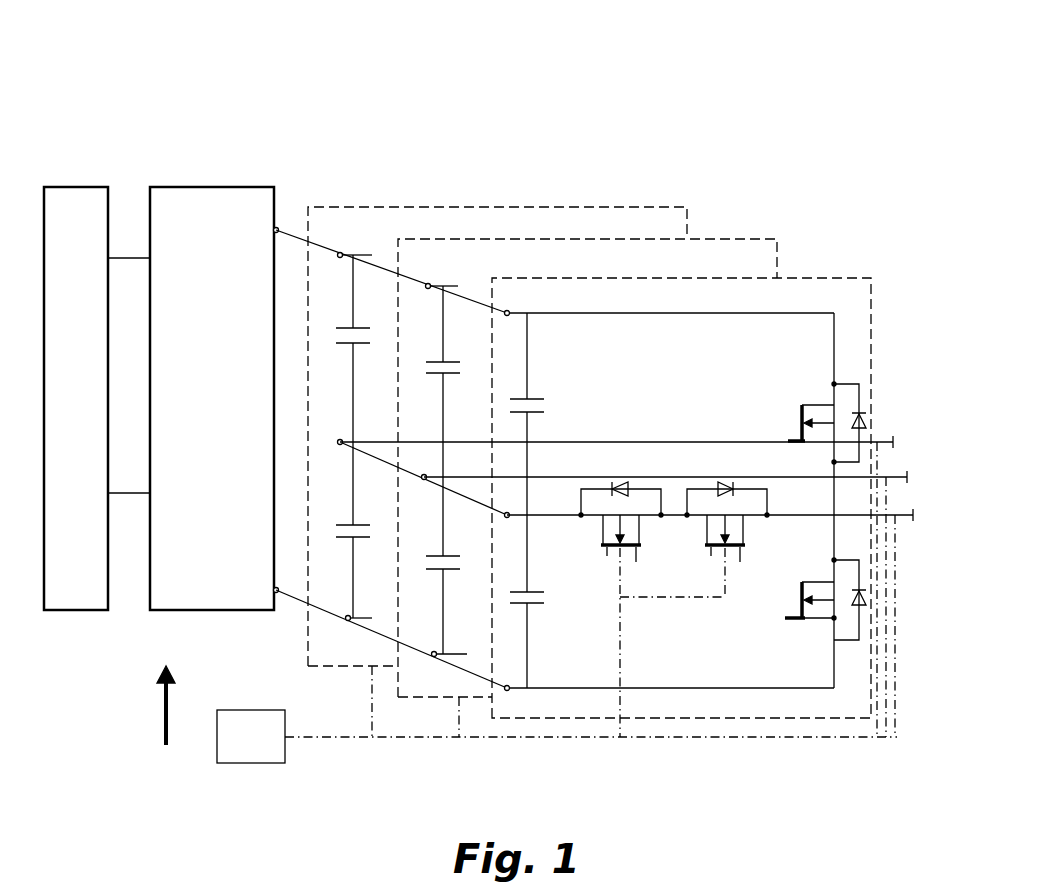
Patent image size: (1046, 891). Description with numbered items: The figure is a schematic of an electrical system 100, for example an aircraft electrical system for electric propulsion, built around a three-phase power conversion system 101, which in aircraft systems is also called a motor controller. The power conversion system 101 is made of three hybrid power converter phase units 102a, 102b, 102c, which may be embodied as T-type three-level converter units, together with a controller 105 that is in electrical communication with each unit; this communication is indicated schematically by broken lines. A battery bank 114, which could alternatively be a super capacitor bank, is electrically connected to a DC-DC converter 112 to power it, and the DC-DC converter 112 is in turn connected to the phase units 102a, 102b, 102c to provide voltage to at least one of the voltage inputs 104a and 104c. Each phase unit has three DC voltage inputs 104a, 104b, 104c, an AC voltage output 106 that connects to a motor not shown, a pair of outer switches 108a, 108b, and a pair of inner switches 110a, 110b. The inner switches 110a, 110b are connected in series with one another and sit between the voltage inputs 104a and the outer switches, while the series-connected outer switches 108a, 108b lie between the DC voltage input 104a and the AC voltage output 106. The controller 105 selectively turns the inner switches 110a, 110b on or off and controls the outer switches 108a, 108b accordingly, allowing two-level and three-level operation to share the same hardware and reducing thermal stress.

The electrical system 100 is at (157, 88).
The three-phase power conversion system 101 is at (277, 690).
The hybrid power converter phase unit 102a is at (815, 256).
The hybrid power converter phase unit 102b is at (713, 222).
The hybrid power converter phase unit 102c is at (541, 196).
The DC voltage input 104a is at (509, 310).
The DC voltage input 104b is at (509, 517).
The DC voltage input 104c is at (508, 693).
The controller 105 is at (557, 602).
The AC voltage output 106 is at (877, 440).
The outer switch 108a is at (839, 382).
The outer switch 108b is at (852, 643).
The inner switch 110a is at (618, 490).
The inner switch 110b is at (723, 490).
The DC-DC converter 112 is at (251, 185).
The battery bank 114 is at (76, 398).